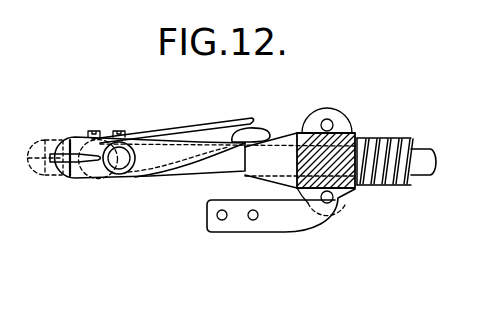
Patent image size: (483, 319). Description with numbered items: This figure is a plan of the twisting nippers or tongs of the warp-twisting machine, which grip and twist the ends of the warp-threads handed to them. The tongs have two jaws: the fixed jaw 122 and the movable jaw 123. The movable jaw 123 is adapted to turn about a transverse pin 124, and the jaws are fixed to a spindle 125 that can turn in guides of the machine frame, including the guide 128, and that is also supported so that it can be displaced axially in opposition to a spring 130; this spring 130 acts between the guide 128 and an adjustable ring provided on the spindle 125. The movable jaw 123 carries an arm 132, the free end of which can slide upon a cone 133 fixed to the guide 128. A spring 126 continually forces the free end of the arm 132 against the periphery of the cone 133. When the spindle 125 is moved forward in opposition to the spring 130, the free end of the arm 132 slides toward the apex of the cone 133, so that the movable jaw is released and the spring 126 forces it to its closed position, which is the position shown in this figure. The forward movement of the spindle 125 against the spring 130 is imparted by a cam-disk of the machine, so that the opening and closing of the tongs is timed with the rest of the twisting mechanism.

The fixed jaw 122 is at (67, 149).
The movable jaw 123 is at (67, 176).
The transverse pin 124 is at (121, 161).
The spindle 125 is at (221, 166).
The spring 126 is at (200, 131).
The guide 128 is at (358, 135).
The spring 130 is at (405, 182).
The arm 132 is at (262, 128).
The cone 133 is at (281, 131).